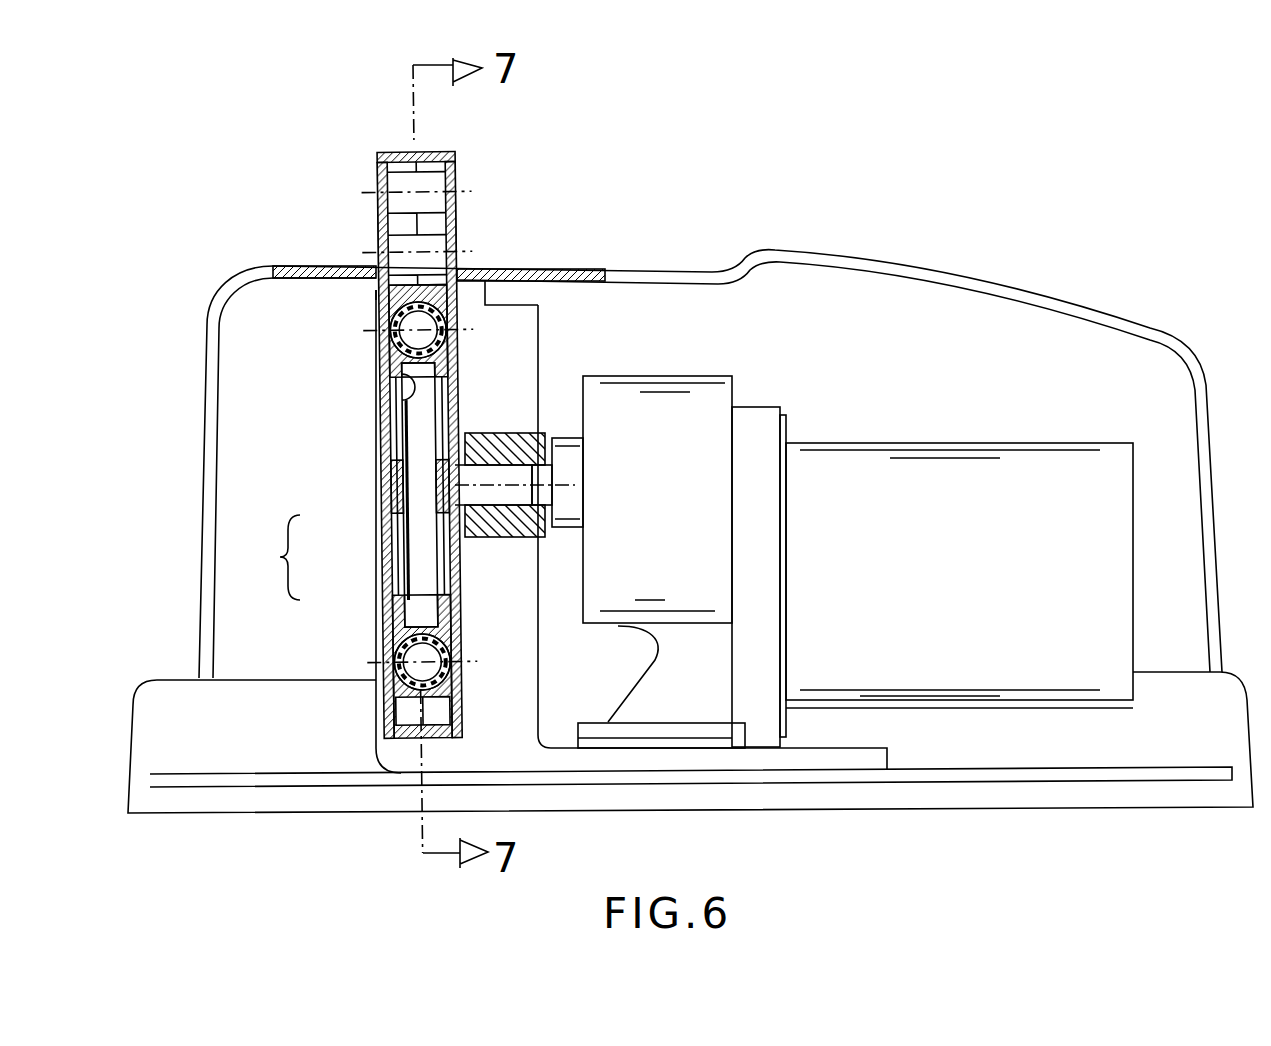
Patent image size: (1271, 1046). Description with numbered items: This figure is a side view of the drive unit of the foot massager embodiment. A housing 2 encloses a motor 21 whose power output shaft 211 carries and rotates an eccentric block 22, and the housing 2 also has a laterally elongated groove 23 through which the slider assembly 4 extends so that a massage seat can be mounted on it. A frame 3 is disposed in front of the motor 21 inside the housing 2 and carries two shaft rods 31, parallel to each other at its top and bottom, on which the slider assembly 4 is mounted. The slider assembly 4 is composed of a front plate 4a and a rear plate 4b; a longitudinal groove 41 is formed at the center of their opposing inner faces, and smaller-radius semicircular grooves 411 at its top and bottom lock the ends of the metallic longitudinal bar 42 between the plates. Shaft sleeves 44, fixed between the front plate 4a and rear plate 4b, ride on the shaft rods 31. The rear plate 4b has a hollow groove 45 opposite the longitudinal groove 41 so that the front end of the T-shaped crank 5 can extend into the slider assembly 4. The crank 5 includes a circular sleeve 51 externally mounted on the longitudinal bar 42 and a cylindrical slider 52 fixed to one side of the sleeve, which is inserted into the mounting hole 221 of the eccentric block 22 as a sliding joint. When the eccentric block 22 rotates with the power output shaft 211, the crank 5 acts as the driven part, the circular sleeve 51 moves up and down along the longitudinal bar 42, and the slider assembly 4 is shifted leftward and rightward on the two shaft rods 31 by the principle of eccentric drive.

The housing 2 is at (933, 292).
The motor 21 is at (827, 490).
The power output shaft 211 is at (583, 453).
The eccentric block 22 is at (512, 447).
The mounting hole 221 is at (540, 497).
The laterally elongated groove 23 is at (485, 273).
The frame 3 is at (515, 678).
The shaft rods 31 is at (377, 297).
The slider assembly 4 is at (375, 138).
The front plate 4a is at (377, 183).
The rear plate 4b is at (457, 167).
The longitudinal groove 41 is at (395, 390).
The semicircular groove 411 is at (405, 407).
The longitudinal bar 42 is at (413, 488).
The shaft sleeve 44 is at (388, 338).
The hollow groove 45 is at (453, 412).
The crank 5 is at (281, 557).
The circular sleeve 51 is at (392, 508).
The cylindrical slider 52 is at (473, 535).